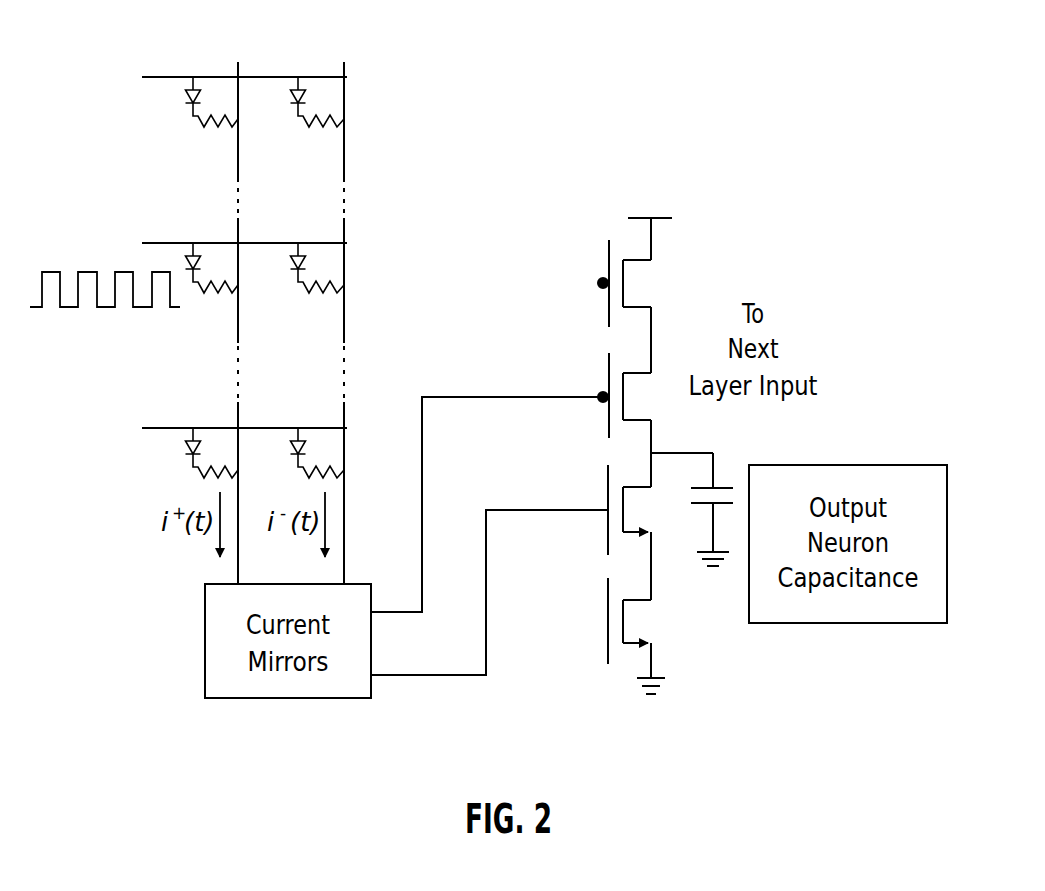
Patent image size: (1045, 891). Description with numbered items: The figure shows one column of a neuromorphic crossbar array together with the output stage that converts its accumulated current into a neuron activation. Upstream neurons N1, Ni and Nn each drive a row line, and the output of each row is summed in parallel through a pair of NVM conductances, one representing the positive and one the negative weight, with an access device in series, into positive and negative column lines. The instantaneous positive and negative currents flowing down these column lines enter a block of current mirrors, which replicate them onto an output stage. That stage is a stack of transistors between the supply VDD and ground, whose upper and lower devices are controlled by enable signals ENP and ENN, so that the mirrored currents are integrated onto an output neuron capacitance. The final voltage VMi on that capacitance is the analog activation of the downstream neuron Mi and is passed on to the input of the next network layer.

The upstream neuron line N1 is at (224, 94).
The upstream neuron line Ni is at (188, 285).
The upstream neuron line Nn is at (224, 445).
The supply voltage VDD is at (679, 232).
The enable P transistor ENP is at (598, 283).
The enable N transistor ENN is at (608, 622).
The output capacitance voltage VMi is at (799, 427).